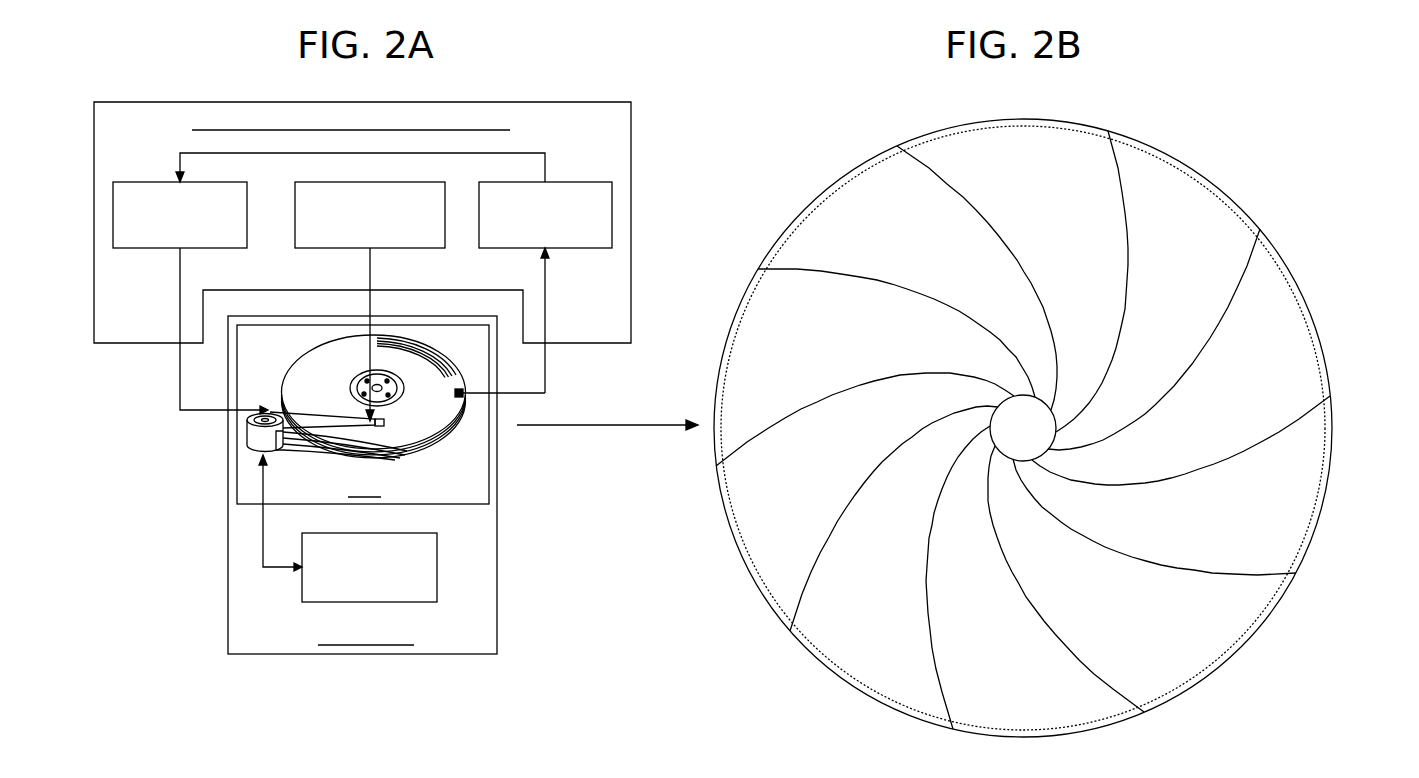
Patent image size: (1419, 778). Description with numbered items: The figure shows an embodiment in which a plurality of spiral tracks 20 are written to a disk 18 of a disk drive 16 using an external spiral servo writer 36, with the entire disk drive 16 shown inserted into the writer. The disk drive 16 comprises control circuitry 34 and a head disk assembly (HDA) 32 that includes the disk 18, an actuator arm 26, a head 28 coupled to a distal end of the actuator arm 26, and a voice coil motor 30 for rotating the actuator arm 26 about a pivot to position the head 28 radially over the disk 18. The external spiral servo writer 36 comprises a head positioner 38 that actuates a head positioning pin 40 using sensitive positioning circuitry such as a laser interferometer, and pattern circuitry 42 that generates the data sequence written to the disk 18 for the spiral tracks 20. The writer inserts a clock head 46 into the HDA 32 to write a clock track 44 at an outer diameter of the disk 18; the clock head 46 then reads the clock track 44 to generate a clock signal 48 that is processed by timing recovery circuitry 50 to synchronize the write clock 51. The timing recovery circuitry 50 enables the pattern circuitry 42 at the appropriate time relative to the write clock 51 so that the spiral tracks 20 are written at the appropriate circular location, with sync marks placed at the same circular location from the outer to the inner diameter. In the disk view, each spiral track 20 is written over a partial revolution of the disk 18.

In FIG. 2A, the disk drive 16 is at (497, 567).
In FIG. 2A, the disk 18 is at (433, 437).
In FIG. 2B, the disk 18 is at (1223, 178).
In FIG. 2B, the spiral tracks 20 is at (1027, 435).
In FIG. 2A, the actuator arm 26 is at (330, 415).
In FIG. 2A, the head 28 is at (384, 425).
In FIG. 2A, the voice coil motor 30 is at (267, 404).
In FIG. 2A, the head disk assembly (HDA) 32 is at (460, 505).
In FIG. 2A, the control circuitry 34 is at (437, 568).
In FIG. 2A, the external spiral servo writer 36 is at (631, 131).
In FIG. 2A, the head positioner 38 is at (338, 248).
In FIG. 2A, the head positioning pin 40 is at (372, 259).
In FIG. 2A, the pattern circuitry 42 is at (158, 248).
In FIG. 2B, the clock track 44 is at (1313, 517).
In FIG. 2A, the clock head 46 is at (457, 393).
In FIG. 2A, the clock signal 48 is at (546, 293).
In FIG. 2A, the timing recovery circuitry 50 is at (518, 248).
In FIG. 2A, the write clock 51 is at (527, 153).